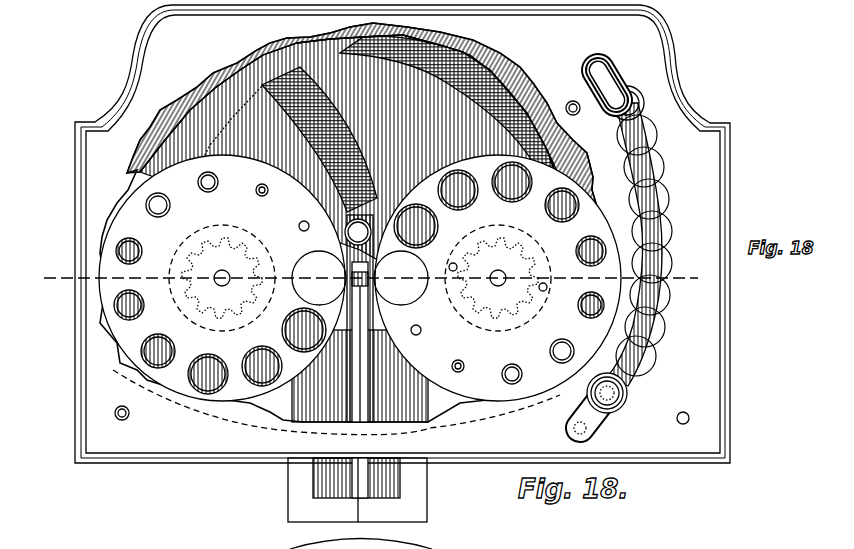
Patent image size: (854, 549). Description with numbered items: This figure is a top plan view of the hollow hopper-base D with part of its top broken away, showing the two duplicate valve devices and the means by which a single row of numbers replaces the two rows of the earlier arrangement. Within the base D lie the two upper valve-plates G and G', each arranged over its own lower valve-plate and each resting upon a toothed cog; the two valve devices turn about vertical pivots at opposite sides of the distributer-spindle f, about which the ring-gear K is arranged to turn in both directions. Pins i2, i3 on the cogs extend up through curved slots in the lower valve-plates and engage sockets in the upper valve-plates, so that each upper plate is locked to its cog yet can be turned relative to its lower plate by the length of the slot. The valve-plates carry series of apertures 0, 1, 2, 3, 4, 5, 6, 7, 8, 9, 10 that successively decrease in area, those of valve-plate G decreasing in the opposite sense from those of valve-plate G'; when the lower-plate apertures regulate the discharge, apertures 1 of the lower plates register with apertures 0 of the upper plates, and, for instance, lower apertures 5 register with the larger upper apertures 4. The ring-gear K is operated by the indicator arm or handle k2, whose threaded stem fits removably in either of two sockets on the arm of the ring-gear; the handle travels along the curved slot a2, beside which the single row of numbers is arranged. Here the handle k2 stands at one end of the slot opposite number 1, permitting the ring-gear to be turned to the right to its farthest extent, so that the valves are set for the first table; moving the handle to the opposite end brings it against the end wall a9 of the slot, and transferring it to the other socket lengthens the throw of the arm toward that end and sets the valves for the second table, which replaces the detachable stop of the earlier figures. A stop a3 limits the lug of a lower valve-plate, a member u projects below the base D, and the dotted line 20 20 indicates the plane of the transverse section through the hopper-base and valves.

The ring-gear K is at (380, 46).
The upper valve-plate G' is at (222, 278).
The upper valve-plate G is at (497, 278).
The distributer-spindle f is at (358, 232).
The pin i2 is at (443, 259).
The pin i3 is at (537, 299).
The curved slot a2 is at (652, 192).
The end of slot a9 is at (622, 88).
The stop a3 is at (360, 376).
The indicator arm or handle k2 is at (620, 410).
The base D is at (735, 388).
The bracket u is at (288, 503).
The section line 20 is at (368, 277).
The aperture 0 of upper valve-plate 0 is at (315, 278).
The aperture / scale number 1 is at (286, 318).
The aperture / scale number 2 is at (262, 356).
The aperture / scale number 3 is at (208, 355).
The aperture 4 of upper valve-plate 4 is at (160, 364).
The aperture / scale number 5 is at (142, 300).
The aperture / scale number 6 is at (129, 265).
The aperture / scale number 7 is at (160, 216).
The aperture / scale number 8 is at (208, 191).
The aperture / scale number 9 is at (258, 194).
The aperture / scale number 10 is at (311, 228).